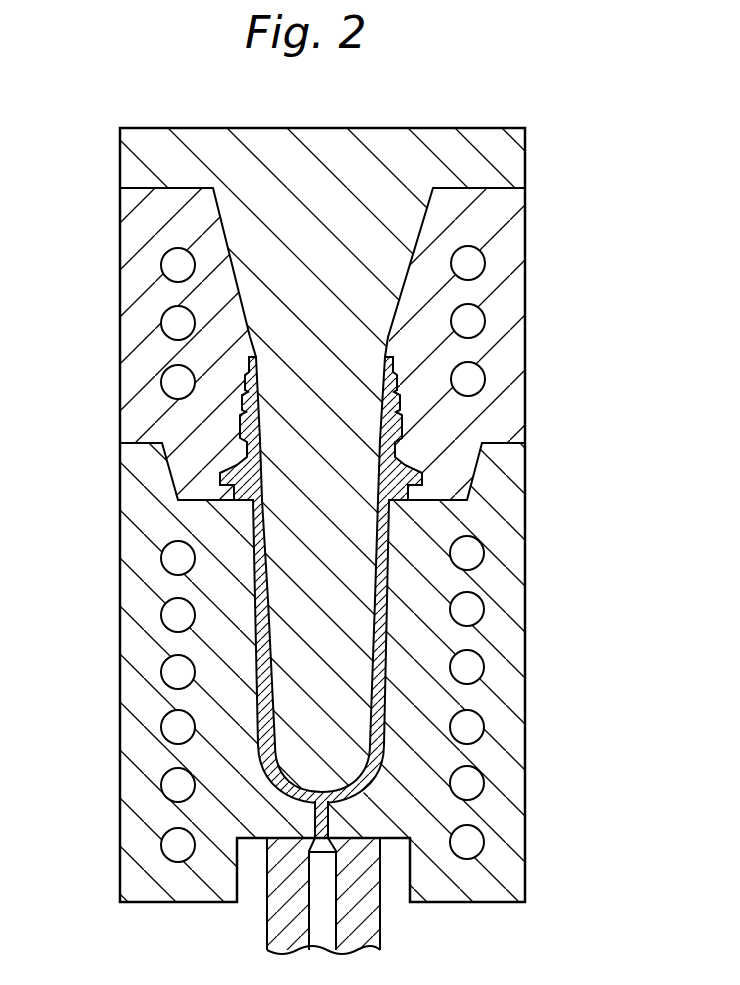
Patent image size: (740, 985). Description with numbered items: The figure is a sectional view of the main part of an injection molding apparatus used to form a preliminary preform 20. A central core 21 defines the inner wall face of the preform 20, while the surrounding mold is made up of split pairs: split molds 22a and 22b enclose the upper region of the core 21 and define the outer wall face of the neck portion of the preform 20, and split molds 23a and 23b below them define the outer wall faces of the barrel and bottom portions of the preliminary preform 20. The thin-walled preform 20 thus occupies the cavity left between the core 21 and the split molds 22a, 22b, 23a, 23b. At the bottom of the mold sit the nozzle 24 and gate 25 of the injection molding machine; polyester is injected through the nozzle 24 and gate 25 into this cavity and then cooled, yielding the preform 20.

The preliminary preform 20 is at (407, 465).
The core 21 is at (378, 168).
The split mold 22a is at (498, 362).
The split mold 22b is at (148, 362).
The split mold 23a is at (505, 557).
The split mold 23b is at (150, 592).
The nozzle 24 is at (360, 928).
The gate 25 is at (308, 838).